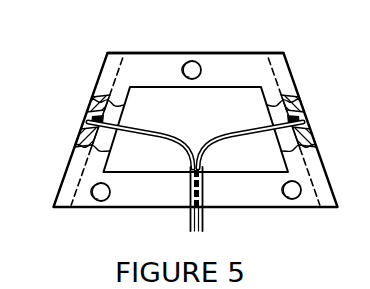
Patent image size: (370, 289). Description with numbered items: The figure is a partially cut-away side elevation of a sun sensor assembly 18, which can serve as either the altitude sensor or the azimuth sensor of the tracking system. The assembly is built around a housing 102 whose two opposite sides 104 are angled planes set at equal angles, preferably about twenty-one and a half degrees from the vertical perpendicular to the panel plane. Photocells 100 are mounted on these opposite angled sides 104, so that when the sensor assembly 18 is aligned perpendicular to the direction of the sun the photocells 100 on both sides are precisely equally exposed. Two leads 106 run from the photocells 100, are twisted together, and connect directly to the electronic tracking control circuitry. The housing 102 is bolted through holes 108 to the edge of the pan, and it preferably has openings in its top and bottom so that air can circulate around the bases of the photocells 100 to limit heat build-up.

The sensor assembly 18 is at (296, 42).
The photocells 100 is at (88, 123).
The housing 102 is at (143, 52).
The sides 104 is at (100, 72).
The leads 106 is at (158, 148).
The holes 108 is at (203, 64).